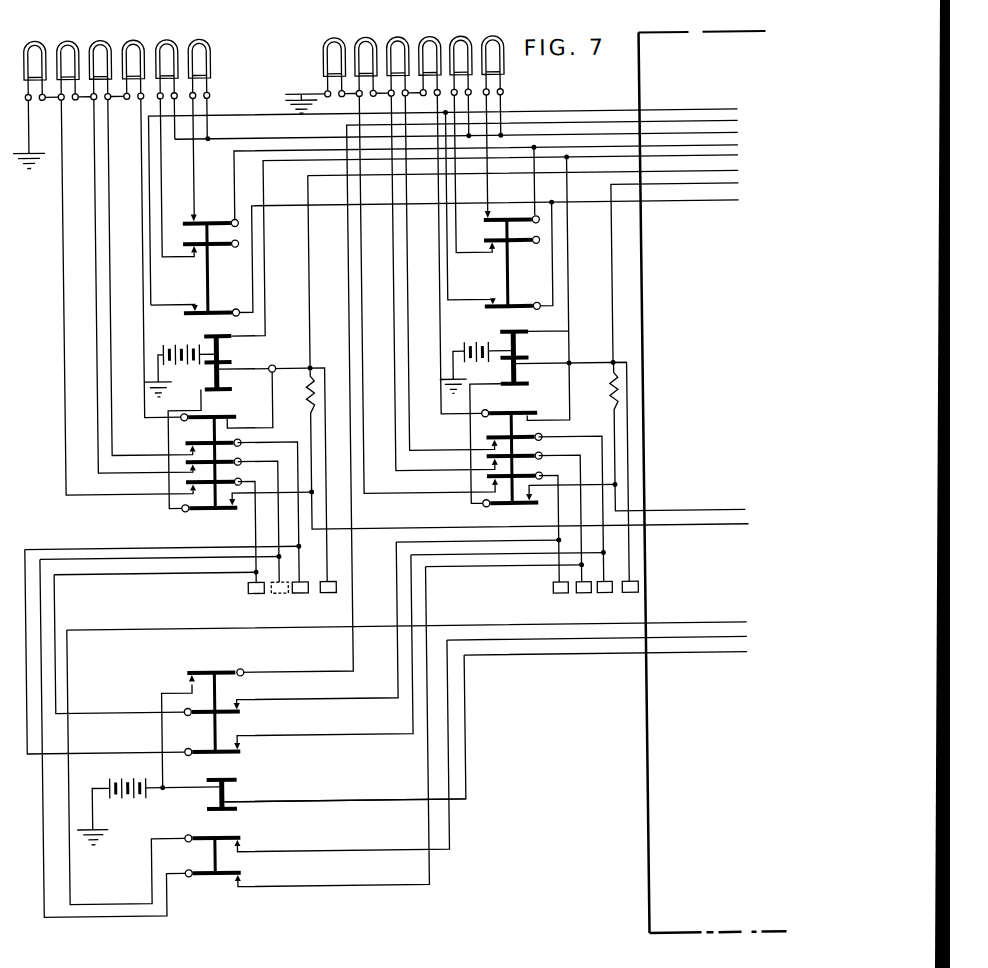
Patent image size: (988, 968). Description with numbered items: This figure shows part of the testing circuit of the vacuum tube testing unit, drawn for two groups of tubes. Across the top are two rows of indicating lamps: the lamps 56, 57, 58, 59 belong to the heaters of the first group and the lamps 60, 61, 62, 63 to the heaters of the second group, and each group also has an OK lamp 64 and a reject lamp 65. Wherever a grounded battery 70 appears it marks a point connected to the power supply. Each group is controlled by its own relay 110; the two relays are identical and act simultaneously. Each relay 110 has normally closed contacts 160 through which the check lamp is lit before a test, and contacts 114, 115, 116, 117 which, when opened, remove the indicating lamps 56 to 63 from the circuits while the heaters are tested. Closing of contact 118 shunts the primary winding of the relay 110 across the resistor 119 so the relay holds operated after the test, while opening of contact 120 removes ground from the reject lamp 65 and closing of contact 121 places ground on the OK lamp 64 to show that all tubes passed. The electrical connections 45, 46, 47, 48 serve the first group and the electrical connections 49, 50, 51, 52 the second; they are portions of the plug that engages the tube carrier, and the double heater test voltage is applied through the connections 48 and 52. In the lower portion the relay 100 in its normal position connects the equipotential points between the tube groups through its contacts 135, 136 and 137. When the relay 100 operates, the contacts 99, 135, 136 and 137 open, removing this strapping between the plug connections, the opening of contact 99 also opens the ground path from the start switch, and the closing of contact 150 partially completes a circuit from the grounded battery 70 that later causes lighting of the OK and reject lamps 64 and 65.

The indicating lamp 56 is at (39, 37).
The indicating lamp 57 is at (72, 37).
The indicating lamp 58 is at (104, 37).
The indicating lamp 59 is at (138, 37).
The indicating lamp 60 is at (338, 37).
The indicating lamp 61 is at (370, 37).
The indicating lamp 62 is at (402, 37).
The indicating lamp 63 is at (434, 37).
The OK lamp 64 is at (171, 37).
The reject lamp 65 is at (204, 37).
The grounded battery 70 is at (179, 343).
The relay 110 is at (231, 359).
The contact 114 is at (234, 413).
The contact 115 is at (189, 491).
The contact 116 is at (189, 470).
The contact 117 is at (189, 452).
The contact 118 is at (236, 504).
The resistor 119 is at (307, 401).
The contact 120 is at (198, 217).
The contact 121 is at (193, 251).
The normally closed contact 160 is at (193, 303).
The electrical connection 45 is at (252, 592).
The electrical connection 46 is at (276, 592).
The electrical connection 47 is at (297, 592).
The electrical connection 48 is at (326, 592).
The electrical connection 49 is at (557, 595).
The electrical connection 50 is at (580, 595).
The electrical connection 51 is at (602, 595).
The electrical connection 52 is at (628, 595).
The contact 150 is at (186, 680).
The contact 136 is at (240, 705).
The contact 135 is at (240, 743).
The relay 100 is at (230, 795).
The contact 99 is at (240, 843).
The contact 137 is at (240, 880).